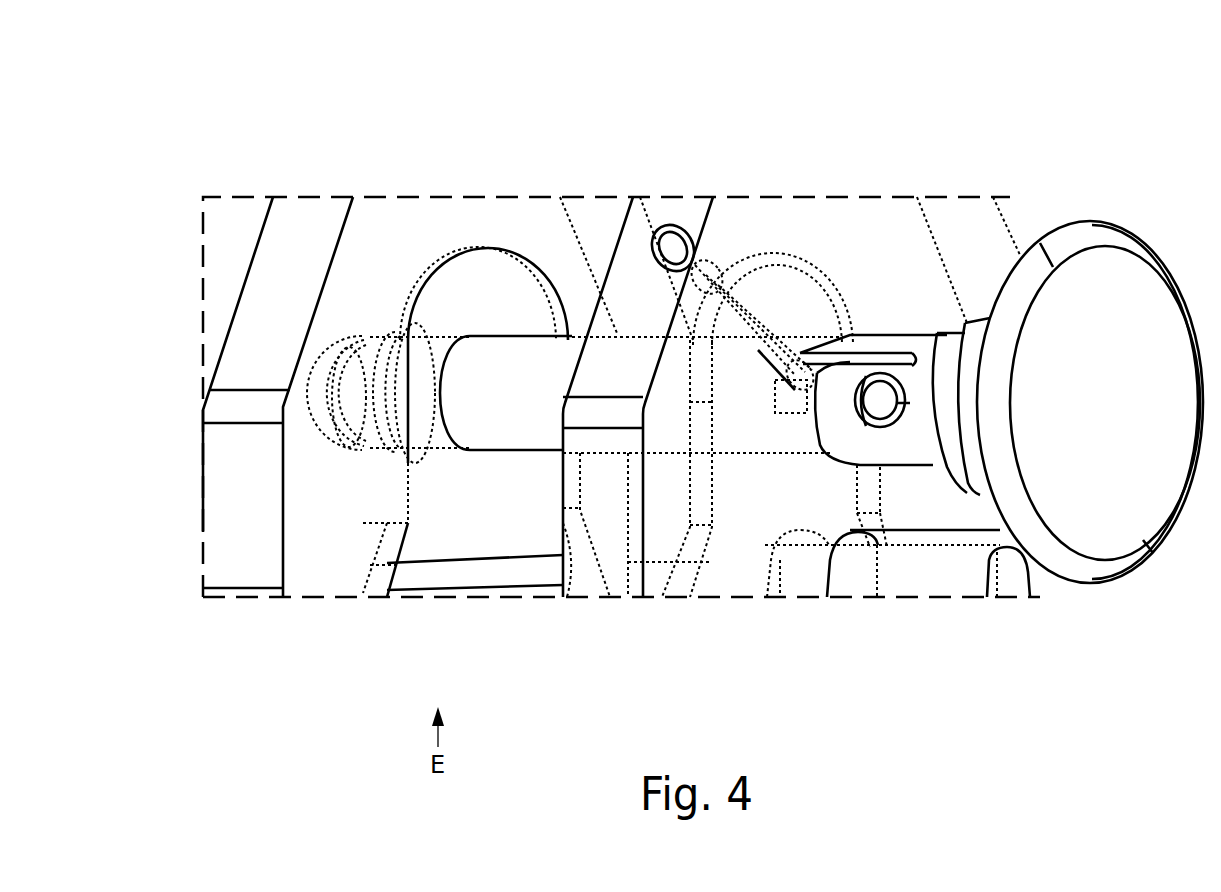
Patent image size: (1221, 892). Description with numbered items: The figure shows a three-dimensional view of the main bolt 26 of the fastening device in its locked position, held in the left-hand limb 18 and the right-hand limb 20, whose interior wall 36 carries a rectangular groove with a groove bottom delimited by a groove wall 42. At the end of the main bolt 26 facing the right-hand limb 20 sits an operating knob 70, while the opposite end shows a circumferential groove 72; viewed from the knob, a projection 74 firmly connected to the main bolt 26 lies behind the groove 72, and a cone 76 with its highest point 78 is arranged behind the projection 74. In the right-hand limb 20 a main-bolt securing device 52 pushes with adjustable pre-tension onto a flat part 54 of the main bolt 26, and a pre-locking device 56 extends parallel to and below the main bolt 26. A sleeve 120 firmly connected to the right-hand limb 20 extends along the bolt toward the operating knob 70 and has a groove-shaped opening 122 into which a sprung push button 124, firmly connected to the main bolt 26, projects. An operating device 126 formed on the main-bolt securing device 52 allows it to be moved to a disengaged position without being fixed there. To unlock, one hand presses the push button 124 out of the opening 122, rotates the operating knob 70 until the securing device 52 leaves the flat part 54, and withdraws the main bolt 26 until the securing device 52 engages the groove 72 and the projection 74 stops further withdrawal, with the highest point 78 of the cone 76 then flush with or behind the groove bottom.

The left-hand limb 18 is at (252, 538).
The right-hand limb 20 is at (608, 570).
The main bolt 26 is at (515, 373).
The interior wall 36 is at (562, 570).
The groove wall 42 is at (737, 570).
The main-bolt securing device 52 is at (758, 350).
The flat part 54 is at (772, 400).
The pre-locking device 56 is at (978, 578).
The operating knob 70 is at (1092, 553).
The circumferential groove 72 is at (343, 353).
The projection 74 is at (367, 457).
The cone 76 is at (317, 363).
The highest point of the cone 78 is at (308, 400).
The sleeve 120 is at (840, 345).
The opening 122 is at (907, 432).
The sprung push button 124 is at (925, 325).
The operating device 126 is at (843, 332).